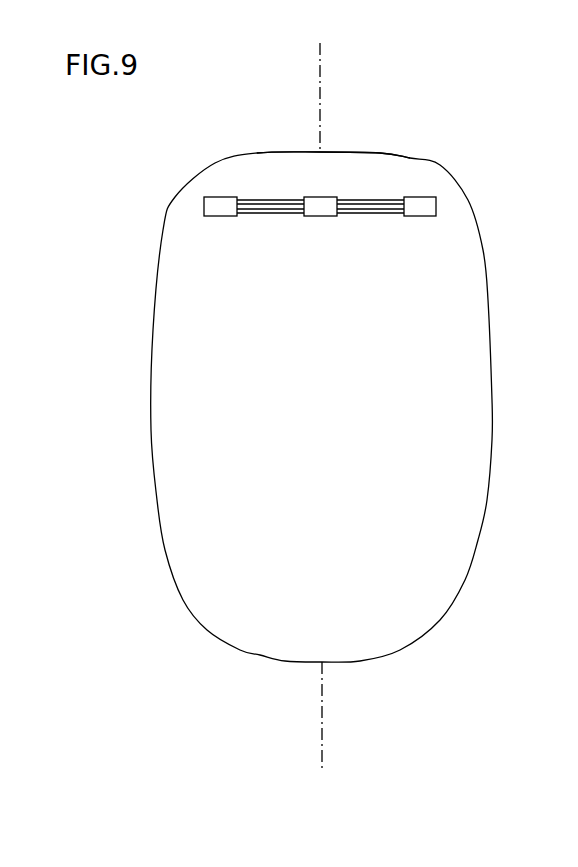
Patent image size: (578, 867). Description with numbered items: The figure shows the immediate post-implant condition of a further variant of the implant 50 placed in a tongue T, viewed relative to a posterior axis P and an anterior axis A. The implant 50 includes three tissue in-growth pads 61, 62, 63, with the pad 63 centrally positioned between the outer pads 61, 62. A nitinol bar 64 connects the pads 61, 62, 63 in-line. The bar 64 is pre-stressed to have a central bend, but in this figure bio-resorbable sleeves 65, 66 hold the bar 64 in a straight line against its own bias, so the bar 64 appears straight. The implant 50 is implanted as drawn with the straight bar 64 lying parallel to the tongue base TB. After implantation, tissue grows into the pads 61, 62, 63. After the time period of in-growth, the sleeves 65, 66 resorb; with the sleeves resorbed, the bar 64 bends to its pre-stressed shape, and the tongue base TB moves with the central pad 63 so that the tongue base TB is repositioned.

The implant 50 is at (255, 237).
The tissue in-growth pad 61 is at (226, 217).
The tissue in-growth pad 62 is at (430, 217).
The tissue in-growth pad 63 is at (325, 217).
The nitinol bar 64 is at (367, 200).
The bio-resorbable sleeve 65 is at (352, 200).
The bio-resorbable sleeve 66 is at (266, 200).
The tire T is at (480, 543).
The tongue base TB is at (398, 156).
The axis P is at (320, 85).
The axis A is at (322, 730).